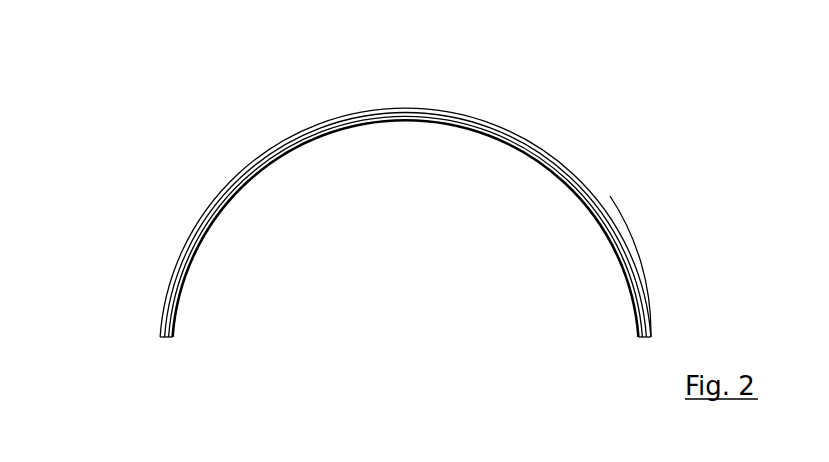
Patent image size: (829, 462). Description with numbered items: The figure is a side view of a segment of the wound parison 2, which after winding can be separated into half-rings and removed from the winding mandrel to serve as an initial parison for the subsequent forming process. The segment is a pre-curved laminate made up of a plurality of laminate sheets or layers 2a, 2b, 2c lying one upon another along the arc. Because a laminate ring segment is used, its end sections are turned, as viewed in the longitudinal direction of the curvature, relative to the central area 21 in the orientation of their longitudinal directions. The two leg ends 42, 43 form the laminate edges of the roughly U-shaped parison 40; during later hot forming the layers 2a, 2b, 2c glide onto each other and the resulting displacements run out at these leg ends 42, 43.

The parison 2 is at (411, 236).
The central area 21 is at (478, 89).
The laminate layer 2a is at (164, 312).
The laminate layer 2b is at (178, 268).
The laminate layer 2c is at (195, 220).
The parison 40 is at (628, 248).
The leg end 42 is at (167, 343).
The leg end 43 is at (639, 344).